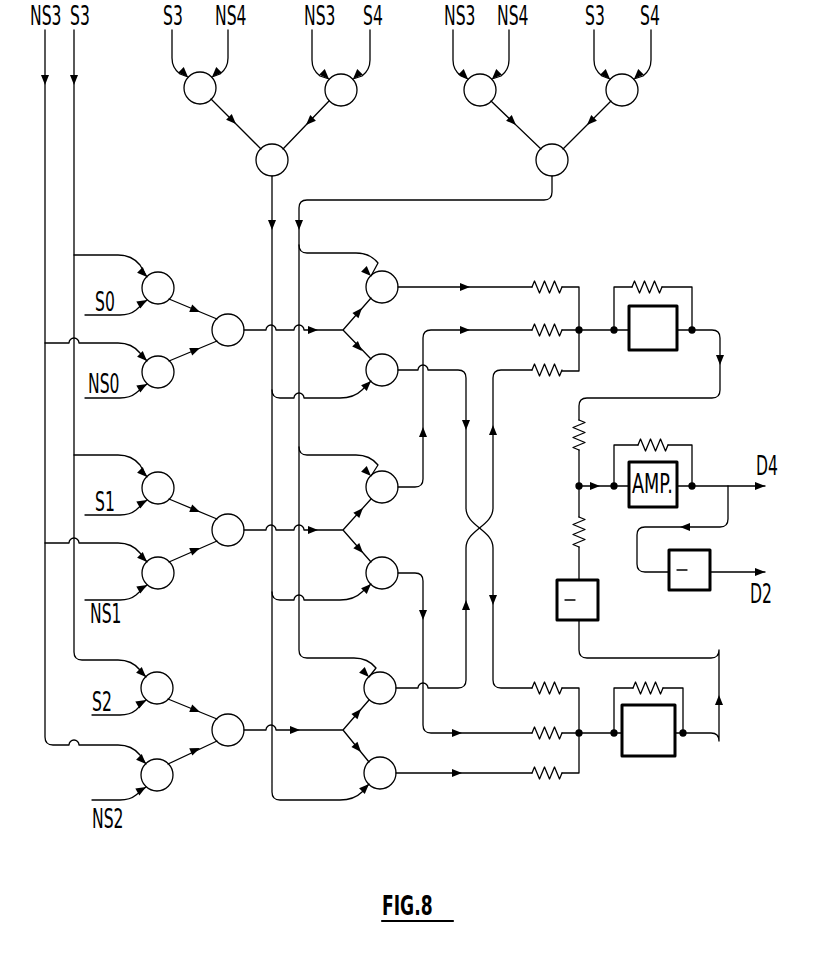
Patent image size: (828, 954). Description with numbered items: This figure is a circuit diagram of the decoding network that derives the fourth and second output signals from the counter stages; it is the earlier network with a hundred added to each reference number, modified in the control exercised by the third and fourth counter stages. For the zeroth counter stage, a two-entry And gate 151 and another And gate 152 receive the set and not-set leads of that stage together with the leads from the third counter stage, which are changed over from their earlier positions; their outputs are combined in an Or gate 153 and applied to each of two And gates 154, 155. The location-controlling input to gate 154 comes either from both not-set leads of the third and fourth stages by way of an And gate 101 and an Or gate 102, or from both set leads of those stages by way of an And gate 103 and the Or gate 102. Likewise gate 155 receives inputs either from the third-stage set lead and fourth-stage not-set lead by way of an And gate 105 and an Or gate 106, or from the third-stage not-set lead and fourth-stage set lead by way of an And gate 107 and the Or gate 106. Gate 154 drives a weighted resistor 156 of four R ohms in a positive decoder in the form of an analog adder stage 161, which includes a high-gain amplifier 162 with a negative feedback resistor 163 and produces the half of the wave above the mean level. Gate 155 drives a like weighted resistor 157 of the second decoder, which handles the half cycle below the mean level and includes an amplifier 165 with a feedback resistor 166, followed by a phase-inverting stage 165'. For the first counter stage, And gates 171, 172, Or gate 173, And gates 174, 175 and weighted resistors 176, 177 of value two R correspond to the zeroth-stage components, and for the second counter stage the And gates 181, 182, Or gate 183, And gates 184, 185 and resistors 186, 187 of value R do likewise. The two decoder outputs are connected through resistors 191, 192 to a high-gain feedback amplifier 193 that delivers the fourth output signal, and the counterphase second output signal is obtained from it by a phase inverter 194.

The And gate 101 is at (473, 104).
The Or gate 102 is at (568, 160).
The And gate 103 is at (638, 92).
The And gate 105 is at (190, 103).
The Or gate 106 is at (288, 158).
The And gate 107 is at (352, 101).
The And gate 151 is at (170, 274).
The And gate 152 is at (170, 384).
The Or gate 153 is at (236, 315).
The And gate 154 is at (392, 273).
The And gate 155 is at (392, 356).
The weighted resistor 156 is at (532, 282).
The weighted resistor 157 is at (532, 683).
The analog adder stage 161 is at (627, 278).
The high-gain amplifier 162 is at (656, 350).
The negative feedback resistor 163 is at (655, 282).
The amplifier 165 is at (663, 750).
The phase-inverting stage 165' is at (551, 599).
The feedback resistor 166 is at (656, 685).
The And gate 171 is at (170, 474).
The And gate 172 is at (170, 584).
The Or gate 173 is at (236, 515).
The And gate 174 is at (402, 462).
The And gate 175 is at (393, 559).
The weighted resistor 176 is at (532, 325).
The weighted resistor 177 is at (532, 728).
The And gate 181 is at (168, 674).
The And gate 182 is at (168, 786).
The Or gate 183 is at (236, 715).
The And gate 184 is at (390, 673).
The And gate 185 is at (385, 790).
The weighted resistor 186 is at (532, 366).
The weighted resistor 187 is at (532, 768).
The resistor 191 is at (572, 440).
The resistor 192 is at (572, 540).
The high-gain feedback amplifier 193 is at (678, 468).
The phase inverter 194 is at (688, 590).